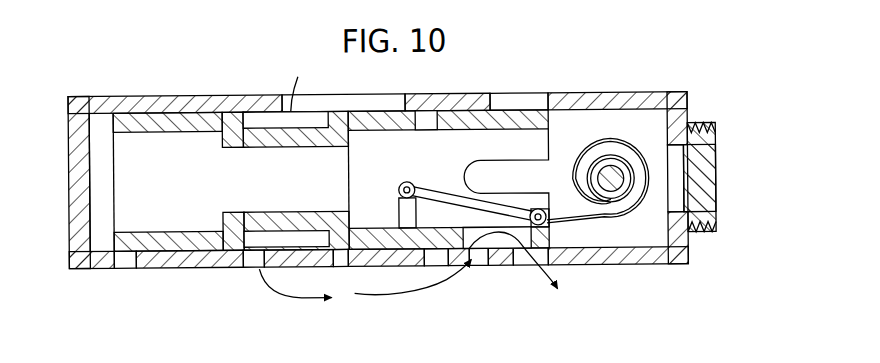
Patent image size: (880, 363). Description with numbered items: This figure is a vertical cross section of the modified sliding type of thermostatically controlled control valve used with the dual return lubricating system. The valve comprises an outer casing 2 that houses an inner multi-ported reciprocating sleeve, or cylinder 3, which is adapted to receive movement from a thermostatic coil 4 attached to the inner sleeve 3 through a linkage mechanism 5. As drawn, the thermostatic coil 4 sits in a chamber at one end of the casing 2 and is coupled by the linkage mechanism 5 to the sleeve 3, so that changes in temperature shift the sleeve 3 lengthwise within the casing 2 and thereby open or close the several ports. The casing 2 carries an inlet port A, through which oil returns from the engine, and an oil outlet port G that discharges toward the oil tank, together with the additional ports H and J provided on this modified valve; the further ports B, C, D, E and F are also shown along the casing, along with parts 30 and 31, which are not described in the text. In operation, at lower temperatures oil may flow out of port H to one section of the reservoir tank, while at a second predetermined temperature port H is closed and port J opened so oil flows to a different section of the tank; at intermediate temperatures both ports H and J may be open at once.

The outer casing 2 is at (600, 105).
The housing bottom wall 30 is at (173, 261).
The sleeve 31 is at (132, 234).
The inner multi-ported reciprocating sleeve 3 is at (349, 134).
The thermostatic coil 4 is at (587, 154).
The linkage mechanism 5 is at (438, 195).
The inlet port A is at (320, 97).
The port J is at (528, 95).
The bottom port B is at (252, 260).
The bottom port C is at (478, 262).
The bottom port D is at (340, 260).
The bottom port E is at (127, 255).
The bottom port F is at (432, 253).
The oil outlet port G is at (677, 203).
The port H is at (535, 254).